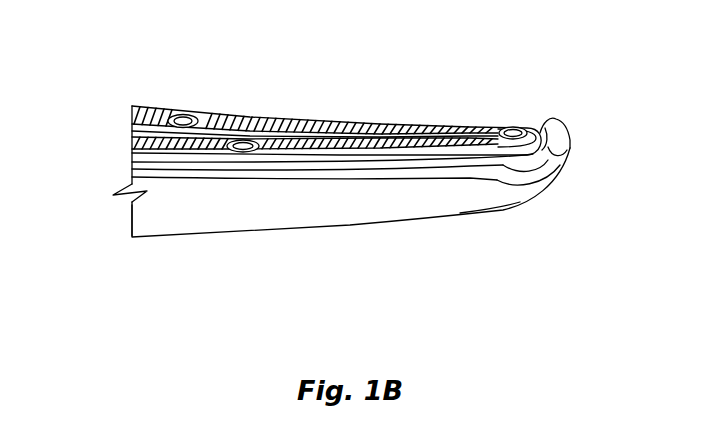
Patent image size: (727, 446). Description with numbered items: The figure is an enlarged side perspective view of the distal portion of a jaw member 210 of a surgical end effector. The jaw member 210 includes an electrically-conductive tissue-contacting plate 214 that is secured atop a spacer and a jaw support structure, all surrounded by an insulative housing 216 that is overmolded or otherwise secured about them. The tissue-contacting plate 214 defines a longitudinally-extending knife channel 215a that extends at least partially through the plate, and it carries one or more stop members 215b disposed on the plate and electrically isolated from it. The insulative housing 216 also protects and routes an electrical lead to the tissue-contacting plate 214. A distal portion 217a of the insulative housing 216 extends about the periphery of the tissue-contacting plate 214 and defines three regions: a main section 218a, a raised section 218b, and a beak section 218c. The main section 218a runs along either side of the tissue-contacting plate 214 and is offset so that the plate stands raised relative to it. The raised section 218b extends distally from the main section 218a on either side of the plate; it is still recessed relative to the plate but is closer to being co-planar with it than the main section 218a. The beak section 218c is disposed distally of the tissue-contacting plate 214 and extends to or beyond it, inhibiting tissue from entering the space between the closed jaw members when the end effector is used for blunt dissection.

The jaw member 210 is at (288, 104).
The tissue-contacting plate 214 is at (247, 117).
The knife channel 215a is at (318, 132).
The stop members 215b is at (192, 110).
The insulative housing 216 is at (392, 223).
The distal portion 217a is at (507, 203).
The main section 218a is at (142, 224).
The raised section 218b is at (568, 167).
The beak section 218c is at (568, 125).